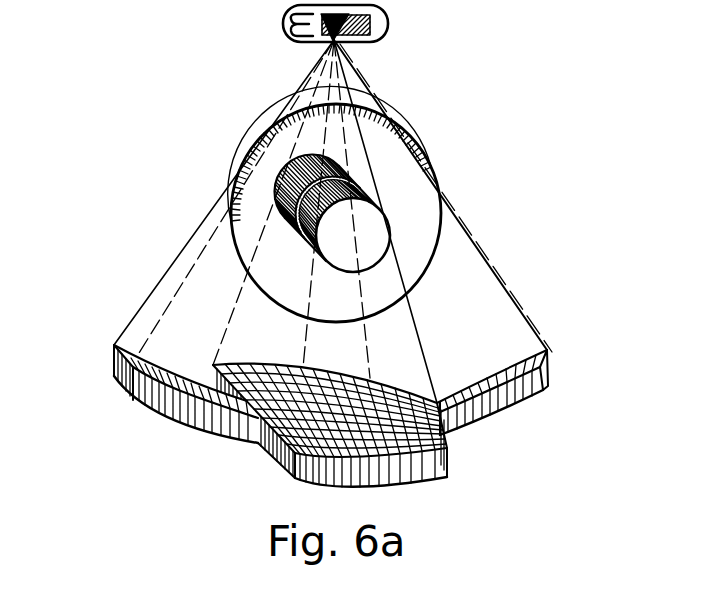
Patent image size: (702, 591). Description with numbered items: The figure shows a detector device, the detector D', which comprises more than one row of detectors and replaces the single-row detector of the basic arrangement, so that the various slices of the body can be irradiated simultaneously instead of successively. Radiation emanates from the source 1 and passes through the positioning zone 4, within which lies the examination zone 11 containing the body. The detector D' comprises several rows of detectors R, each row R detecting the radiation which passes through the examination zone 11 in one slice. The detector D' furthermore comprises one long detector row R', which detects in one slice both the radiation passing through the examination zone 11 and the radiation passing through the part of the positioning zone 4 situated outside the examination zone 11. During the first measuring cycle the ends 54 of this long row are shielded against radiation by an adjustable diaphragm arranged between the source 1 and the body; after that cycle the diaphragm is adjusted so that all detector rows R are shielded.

The source 1 is at (378, 20).
The positioning zone 4 is at (420, 190).
The examination zone 11 is at (373, 220).
The ends 54 is at (201, 418).
The rows of detectors R is at (331, 419).
The long detector row R' is at (511, 339).
The detector D' is at (80, 349).